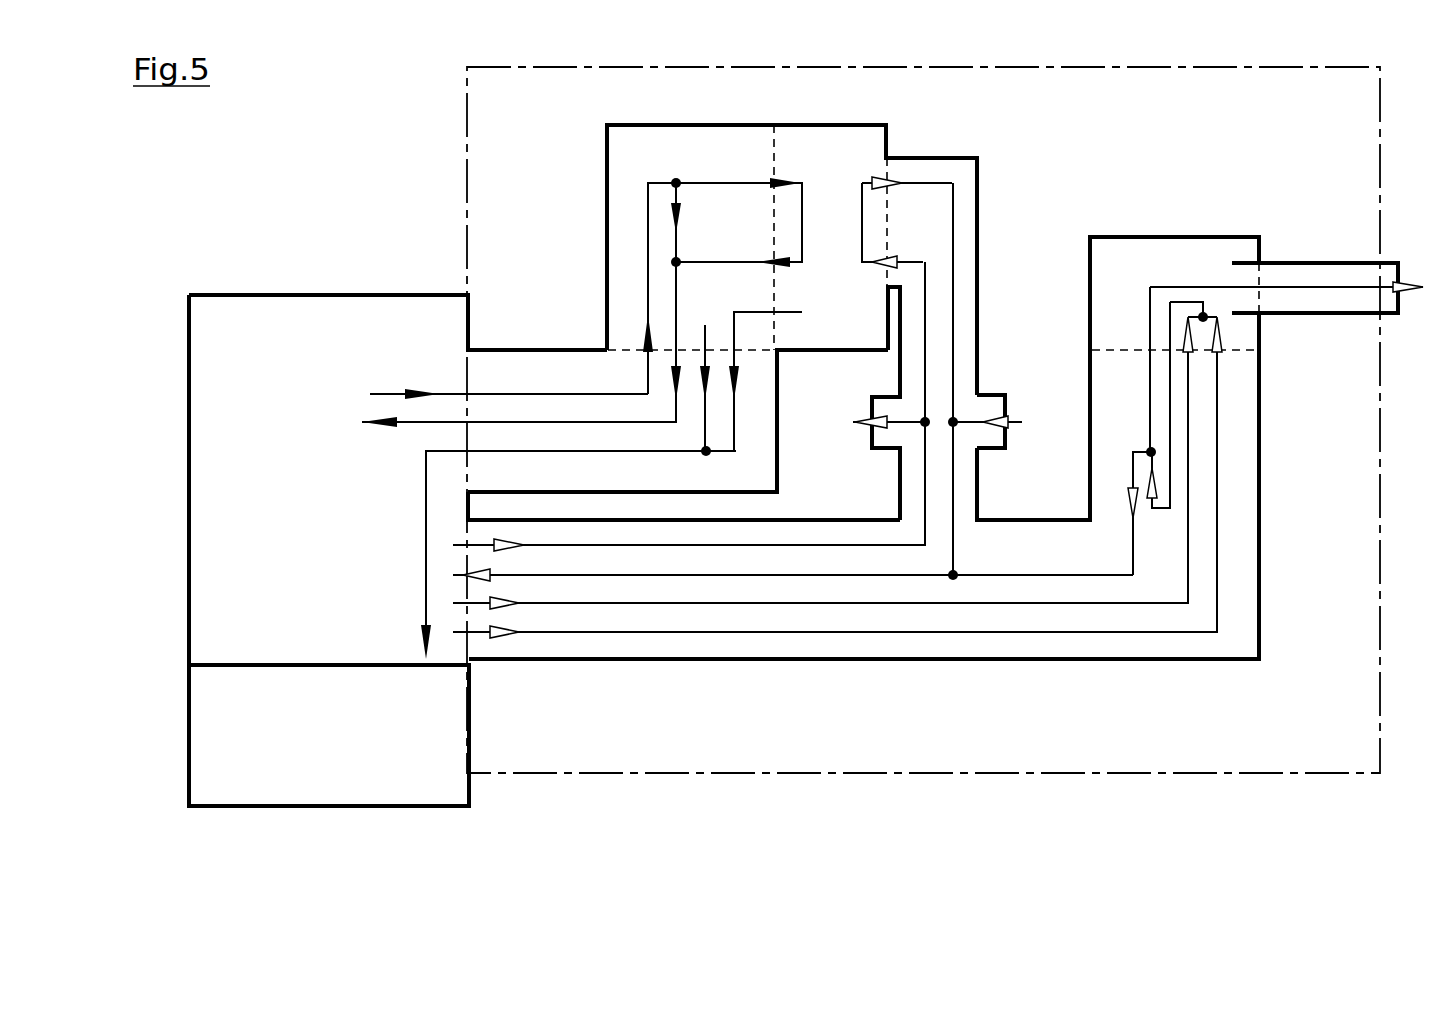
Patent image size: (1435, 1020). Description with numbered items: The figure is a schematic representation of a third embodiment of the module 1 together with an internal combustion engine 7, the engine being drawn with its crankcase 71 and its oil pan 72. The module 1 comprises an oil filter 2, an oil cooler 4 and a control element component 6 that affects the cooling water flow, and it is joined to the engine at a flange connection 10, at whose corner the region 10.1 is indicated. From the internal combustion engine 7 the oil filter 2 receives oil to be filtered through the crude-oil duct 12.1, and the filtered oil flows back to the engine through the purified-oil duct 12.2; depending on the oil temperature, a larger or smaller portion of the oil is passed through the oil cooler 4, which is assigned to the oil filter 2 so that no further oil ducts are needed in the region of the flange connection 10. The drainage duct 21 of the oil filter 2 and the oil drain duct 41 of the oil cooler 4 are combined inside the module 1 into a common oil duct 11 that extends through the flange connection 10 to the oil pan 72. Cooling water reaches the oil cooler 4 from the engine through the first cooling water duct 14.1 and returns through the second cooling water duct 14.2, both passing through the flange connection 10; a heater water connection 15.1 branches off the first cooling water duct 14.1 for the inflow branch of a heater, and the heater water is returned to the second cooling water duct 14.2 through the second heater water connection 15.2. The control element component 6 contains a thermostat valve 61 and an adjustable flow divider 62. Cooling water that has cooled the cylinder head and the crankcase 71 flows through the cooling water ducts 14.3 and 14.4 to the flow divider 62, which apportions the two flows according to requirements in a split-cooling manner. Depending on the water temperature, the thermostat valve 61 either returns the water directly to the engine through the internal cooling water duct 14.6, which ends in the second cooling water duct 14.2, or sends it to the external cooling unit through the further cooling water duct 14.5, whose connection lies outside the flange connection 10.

The module 1 is at (467, 155).
The oil filter 2 is at (722, 279).
The oil cooler 4 is at (886, 222).
The control element component 6 is at (1187, 233).
The internal combustion engine 7 is at (188, 512).
The flange connection 10 is at (470, 661).
The housing inlet corner 10.1 is at (470, 348).
The common oil duct 11 is at (595, 451).
The crude-oil duct 12.1 is at (457, 392).
The purified-oil duct 12.2 is at (462, 420).
The first cooling water duct 14.1 is at (925, 295).
The second cooling water duct 14.2 is at (937, 182).
The cooling water duct 14.3 is at (857, 603).
The cooling water duct 14.4 is at (1002, 632).
The further cooling water duct 14.5 is at (1270, 292).
The internal cooling water duct 14.6 is at (1002, 575).
The heater water connection 15.1 is at (879, 418).
The second heater water connection 15.2 is at (987, 417).
The drainage duct 21 is at (708, 400).
The oil drain duct 41 is at (787, 311).
The thermostat valve 61 is at (1141, 431).
The adjustable flow divider 62 is at (1183, 305).
The crankcase 71 is at (328, 480).
The oil pan 72 is at (329, 734).